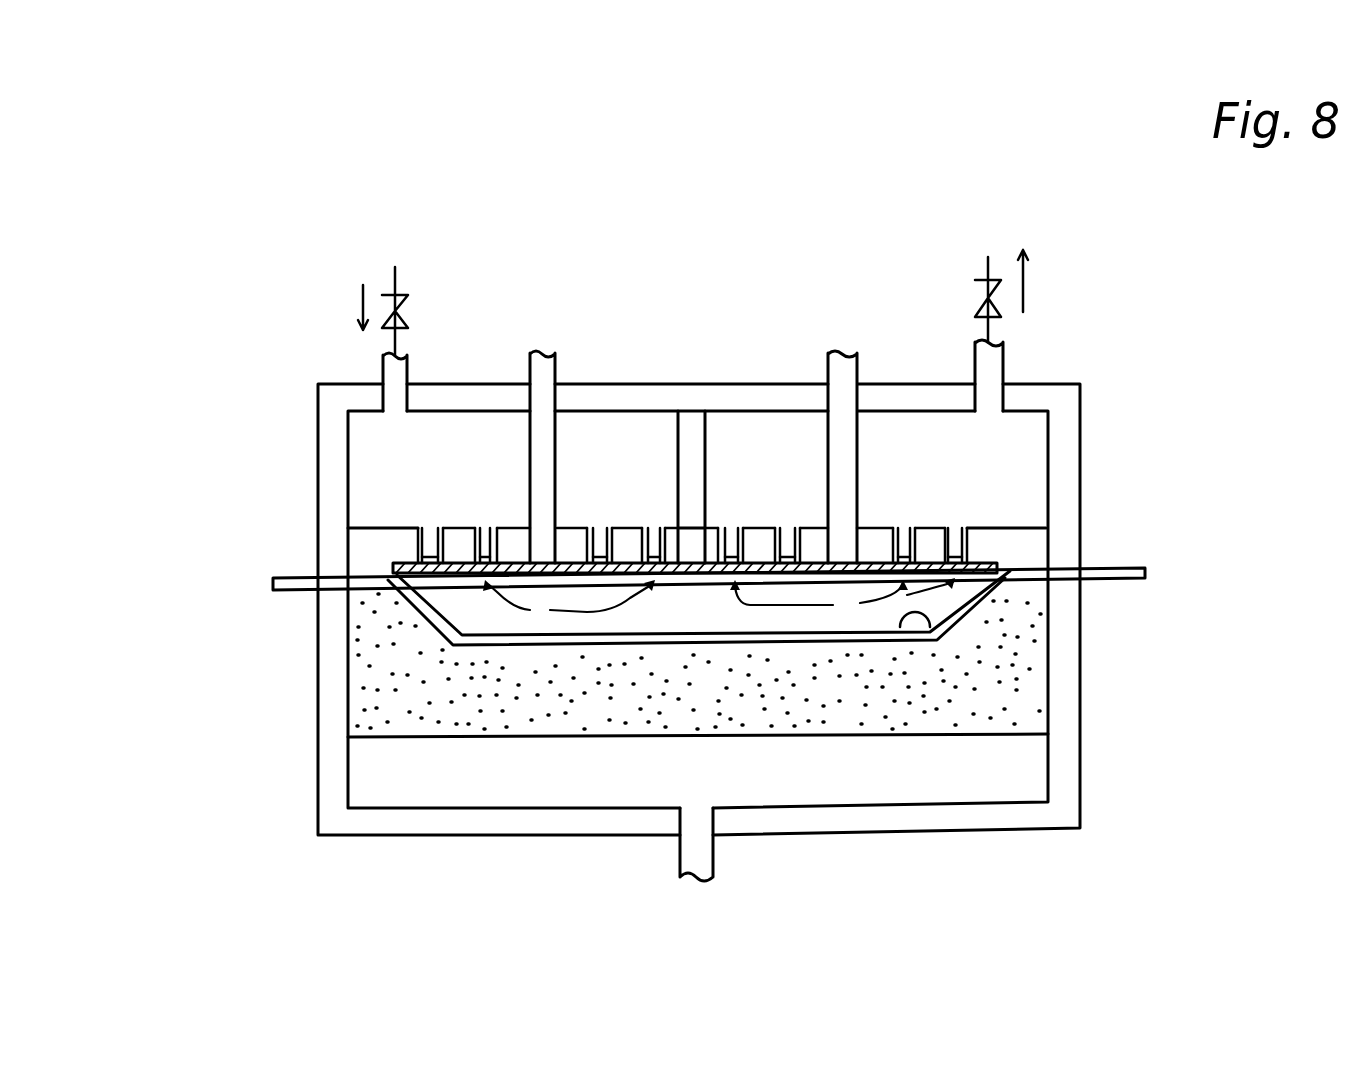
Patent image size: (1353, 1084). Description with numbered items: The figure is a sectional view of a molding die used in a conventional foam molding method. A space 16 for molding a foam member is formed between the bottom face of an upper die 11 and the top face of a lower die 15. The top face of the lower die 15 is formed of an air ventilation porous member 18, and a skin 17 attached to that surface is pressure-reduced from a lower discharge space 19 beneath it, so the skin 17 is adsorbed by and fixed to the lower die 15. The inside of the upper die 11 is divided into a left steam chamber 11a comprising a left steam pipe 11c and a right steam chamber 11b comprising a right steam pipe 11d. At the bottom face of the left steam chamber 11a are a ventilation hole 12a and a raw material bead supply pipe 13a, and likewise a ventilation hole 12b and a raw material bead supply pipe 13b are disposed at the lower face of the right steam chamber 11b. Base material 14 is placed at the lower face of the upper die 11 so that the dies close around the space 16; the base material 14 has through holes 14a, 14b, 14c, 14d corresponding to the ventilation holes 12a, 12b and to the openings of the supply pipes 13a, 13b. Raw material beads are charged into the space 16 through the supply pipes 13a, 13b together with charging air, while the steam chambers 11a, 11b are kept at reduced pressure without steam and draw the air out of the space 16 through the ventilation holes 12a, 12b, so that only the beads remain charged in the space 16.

The upper die 11 is at (335, 478).
The left steam chamber 11a is at (607, 447).
The right steam chamber 11b is at (758, 438).
The left steam pipe 11c is at (383, 374).
The right steam pipe 11d is at (992, 367).
The ventilation hole 12a is at (652, 527).
The ventilation hole 12b is at (731, 525).
The raw material bead supply pipe 13a is at (538, 445).
The raw material bead supply pipe 13b is at (848, 436).
The base material 14 is at (692, 576).
The through hole 14a is at (542, 579).
The through hole 14b is at (848, 580).
The through hole 14c is at (597, 579).
The through hole 14d is at (792, 579).
The lower die 15 is at (335, 727).
The space for molding a foam member 16 is at (480, 603).
The skin 17 is at (947, 622).
The air ventilation porous member 18 is at (985, 685).
The lower discharge space 19 is at (982, 767).